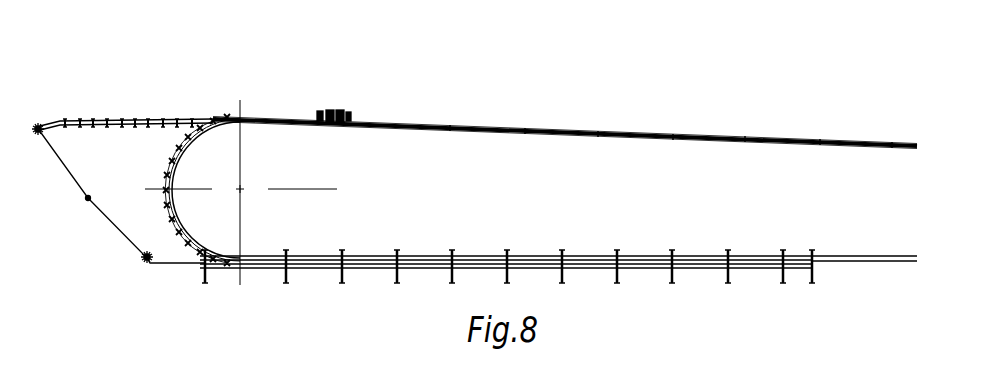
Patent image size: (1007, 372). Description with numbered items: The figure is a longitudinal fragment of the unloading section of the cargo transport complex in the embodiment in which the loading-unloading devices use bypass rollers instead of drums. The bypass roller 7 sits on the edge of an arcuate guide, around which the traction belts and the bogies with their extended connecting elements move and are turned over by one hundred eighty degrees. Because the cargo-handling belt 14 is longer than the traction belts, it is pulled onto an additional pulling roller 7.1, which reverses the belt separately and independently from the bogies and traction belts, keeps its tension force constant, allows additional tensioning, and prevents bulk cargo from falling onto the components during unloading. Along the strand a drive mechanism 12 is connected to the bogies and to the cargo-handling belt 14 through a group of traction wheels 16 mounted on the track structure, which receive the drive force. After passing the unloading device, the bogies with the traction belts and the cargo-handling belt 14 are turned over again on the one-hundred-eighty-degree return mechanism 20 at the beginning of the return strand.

The pulling roller 7.1 is at (40, 126).
The cargo-handling belt 14 is at (88, 198).
The bypass roller 7 is at (228, 115).
The traction wheel 16 is at (318, 113).
The drive mechanism 12 is at (337, 115).
The 180°-return mechanism 20 is at (342, 250).